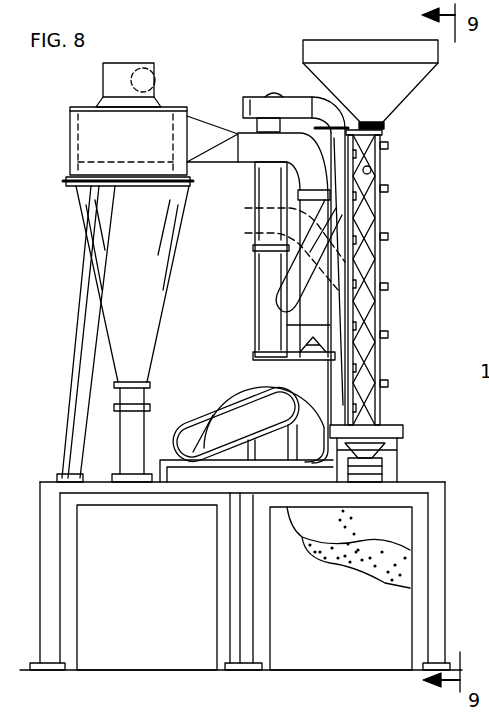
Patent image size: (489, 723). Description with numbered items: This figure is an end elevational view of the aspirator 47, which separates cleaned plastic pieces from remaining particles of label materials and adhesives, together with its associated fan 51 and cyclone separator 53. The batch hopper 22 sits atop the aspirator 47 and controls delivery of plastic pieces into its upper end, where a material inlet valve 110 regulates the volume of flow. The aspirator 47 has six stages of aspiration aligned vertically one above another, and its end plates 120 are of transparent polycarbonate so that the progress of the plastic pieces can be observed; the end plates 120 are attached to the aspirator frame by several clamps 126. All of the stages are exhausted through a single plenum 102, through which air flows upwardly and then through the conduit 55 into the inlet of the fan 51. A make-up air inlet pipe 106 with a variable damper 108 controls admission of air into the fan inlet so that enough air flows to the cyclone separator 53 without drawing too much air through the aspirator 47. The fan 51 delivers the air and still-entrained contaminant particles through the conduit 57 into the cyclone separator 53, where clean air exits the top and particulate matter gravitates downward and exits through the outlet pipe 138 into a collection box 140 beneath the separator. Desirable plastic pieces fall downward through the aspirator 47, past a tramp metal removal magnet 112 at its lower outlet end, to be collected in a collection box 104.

The batch hopper 22 is at (352, 47).
The cyclone separator 53 is at (86, 209).
The outlet pipe 138 is at (120, 430).
The plenum 102 is at (334, 157).
The material inlet valve 110 is at (372, 171).
The aspirator 47 is at (398, 317).
The end plates 120 is at (358, 240).
The clamps 126 is at (374, 248).
The conduit 57 is at (320, 296).
The make-up air inlet pipe 106 is at (245, 208).
The damper 108 is at (245, 233).
The conduit 55 is at (254, 298).
The fan 51 is at (235, 390).
The tramp metal removal magnet 112 is at (382, 466).
The collection box 140 is at (163, 636).
The collection box 104 is at (360, 636).